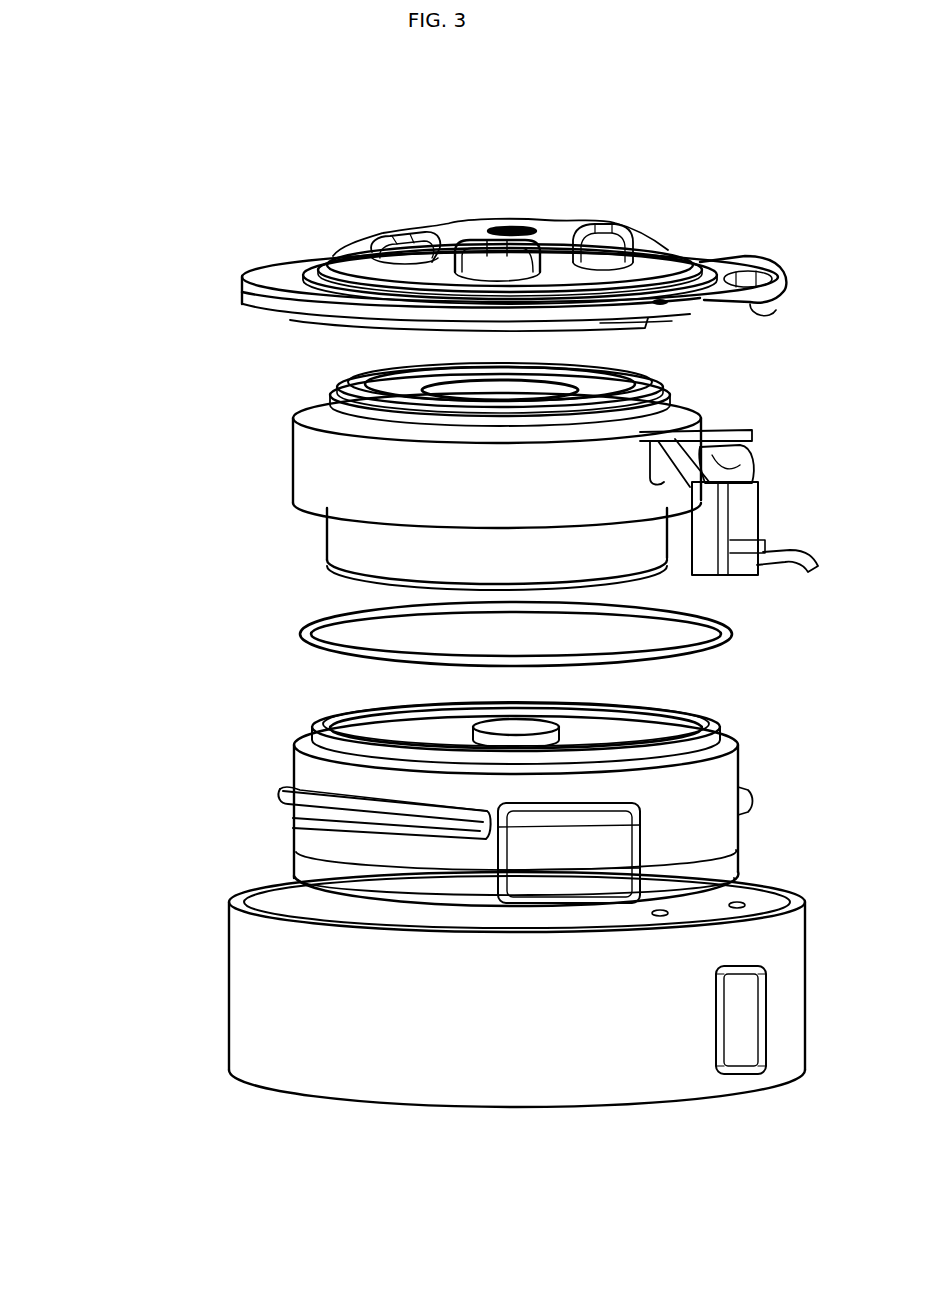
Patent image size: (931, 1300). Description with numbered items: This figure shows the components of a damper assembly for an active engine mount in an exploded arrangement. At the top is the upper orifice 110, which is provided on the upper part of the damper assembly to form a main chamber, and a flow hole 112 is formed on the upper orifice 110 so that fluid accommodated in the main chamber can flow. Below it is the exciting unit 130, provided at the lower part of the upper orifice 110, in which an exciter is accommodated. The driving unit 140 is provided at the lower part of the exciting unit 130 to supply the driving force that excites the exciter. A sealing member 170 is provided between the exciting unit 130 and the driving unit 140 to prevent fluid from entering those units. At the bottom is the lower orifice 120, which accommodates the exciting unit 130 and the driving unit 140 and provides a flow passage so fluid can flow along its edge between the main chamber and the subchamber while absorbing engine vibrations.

The upper orifice 110 is at (292, 258).
The flow hole 112 is at (410, 230).
The exciting unit 130 is at (236, 452).
The sealing member 170 is at (300, 634).
The driving unit 140 is at (228, 783).
The lower orifice 120 is at (229, 979).